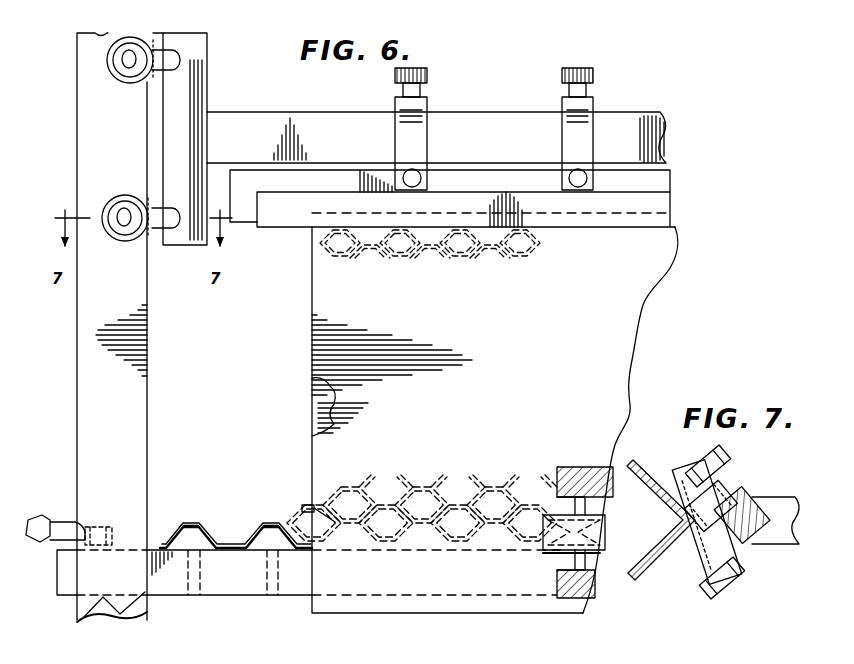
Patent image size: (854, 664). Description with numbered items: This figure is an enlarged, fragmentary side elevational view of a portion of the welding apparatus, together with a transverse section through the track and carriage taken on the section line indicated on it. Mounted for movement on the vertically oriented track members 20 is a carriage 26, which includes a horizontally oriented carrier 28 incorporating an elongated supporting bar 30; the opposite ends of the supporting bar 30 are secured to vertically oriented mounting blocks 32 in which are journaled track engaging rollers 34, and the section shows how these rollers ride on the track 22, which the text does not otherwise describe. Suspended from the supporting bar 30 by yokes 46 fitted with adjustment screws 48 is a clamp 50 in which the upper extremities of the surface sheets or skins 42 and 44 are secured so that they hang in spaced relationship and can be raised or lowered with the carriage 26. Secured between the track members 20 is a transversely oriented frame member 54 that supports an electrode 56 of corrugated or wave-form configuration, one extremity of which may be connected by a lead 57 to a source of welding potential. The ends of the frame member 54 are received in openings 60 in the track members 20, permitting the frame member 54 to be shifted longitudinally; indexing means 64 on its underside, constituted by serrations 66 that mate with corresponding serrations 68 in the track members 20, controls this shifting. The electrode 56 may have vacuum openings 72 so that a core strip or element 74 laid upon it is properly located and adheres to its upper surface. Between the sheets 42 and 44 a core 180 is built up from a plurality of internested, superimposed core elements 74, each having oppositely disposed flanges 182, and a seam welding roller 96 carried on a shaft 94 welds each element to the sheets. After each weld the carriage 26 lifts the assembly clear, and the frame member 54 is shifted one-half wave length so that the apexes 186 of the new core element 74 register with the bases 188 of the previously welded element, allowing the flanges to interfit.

In FIG. 6, the track members 20 is at (110, 327).
In FIG. 7, the track members 20 is at (656, 551).
In FIG. 6, the rail 22 is at (95, 375).
In FIG. 7, the rail 22 is at (660, 570).
In FIG. 6, the carriage 26 is at (455, 122).
In FIG. 6, the carrier 28 is at (455, 121).
In FIG. 6, the supporting bar 30 is at (652, 140).
In FIG. 7, the supporting bar 30 is at (772, 540).
In FIG. 6, the mounting blocks 32 is at (185, 108).
In FIG. 7, the mounting blocks 32 is at (742, 508).
In FIG. 6, the track engaging rollers 34 is at (125, 72).
In FIG. 7, the track engaging rollers 34 is at (705, 460).
In FIG. 6, the surface sheet 42 is at (473, 420).
In FIG. 6, the surface sheet 44 is at (312, 392).
In FIG. 6, the yokes 46 is at (427, 150).
In FIG. 6, the adjustment screws 48 is at (427, 75).
In FIG. 6, the clamp 50 is at (668, 205).
In FIG. 6, the frame member 54 is at (260, 592).
In FIG. 6, the electrode 56 is at (247, 509).
In FIG. 6, the lead 57 is at (40, 520).
In FIG. 6, the openings 60 is at (82, 597).
In FIG. 6, the indexing means 64 is at (125, 615).
In FIG. 6, the serrations 66 is at (147, 605).
In FIG. 6, the serrations 68 is at (112, 604).
In FIG. 6, the vacuum openings 72 is at (193, 525).
In FIG. 6, the core strip 74 is at (425, 268).
In FIG. 6, the shaft 94 is at (598, 558).
In FIG. 6, the seam welding roller 96 is at (600, 525).
In FIG. 6, the core 180 is at (352, 475).
In FIG. 6, the flanges 182 is at (525, 480).
In FIG. 6, the apexes 186 is at (287, 525).
In FIG. 6, the bases 188 is at (520, 240).